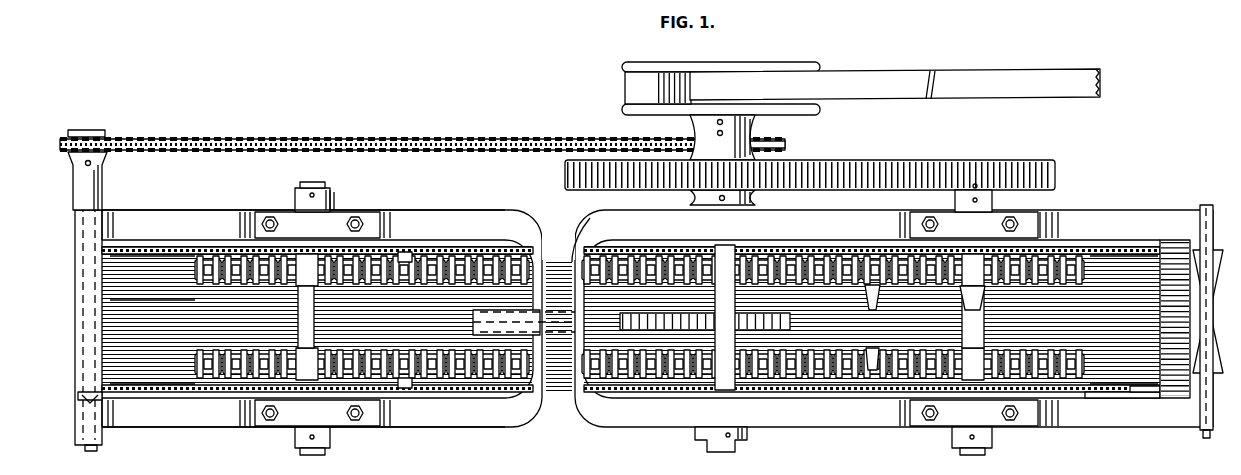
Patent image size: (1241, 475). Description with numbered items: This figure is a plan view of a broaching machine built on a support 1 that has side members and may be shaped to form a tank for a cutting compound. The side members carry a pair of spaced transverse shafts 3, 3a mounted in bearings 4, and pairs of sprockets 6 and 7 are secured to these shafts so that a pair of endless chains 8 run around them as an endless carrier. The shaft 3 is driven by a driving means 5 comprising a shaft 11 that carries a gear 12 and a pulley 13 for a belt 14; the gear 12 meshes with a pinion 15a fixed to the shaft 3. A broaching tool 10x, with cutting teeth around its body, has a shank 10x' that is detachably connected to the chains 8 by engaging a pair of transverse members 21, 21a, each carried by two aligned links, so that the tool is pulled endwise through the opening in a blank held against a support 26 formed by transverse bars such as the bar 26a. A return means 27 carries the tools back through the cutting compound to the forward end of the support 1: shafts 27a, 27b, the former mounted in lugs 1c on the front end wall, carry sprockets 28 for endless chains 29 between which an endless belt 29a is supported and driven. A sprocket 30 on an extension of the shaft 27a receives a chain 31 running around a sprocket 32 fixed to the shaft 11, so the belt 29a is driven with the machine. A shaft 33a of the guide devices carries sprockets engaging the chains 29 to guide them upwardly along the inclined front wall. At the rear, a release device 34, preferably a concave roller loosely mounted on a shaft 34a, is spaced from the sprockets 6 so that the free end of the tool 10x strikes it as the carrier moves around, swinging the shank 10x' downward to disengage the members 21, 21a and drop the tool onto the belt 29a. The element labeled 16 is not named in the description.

The support 1 is at (412, 425).
The lugs 1c is at (96, 226).
The transverse shaft 3 is at (590, 322).
The transverse shaft 3a is at (298, 320).
The bearings 4 is at (332, 216).
The driving means 5 is at (845, 168).
The sprockets 6 is at (980, 236).
The sprockets 7 is at (312, 255).
The endless chains 8 is at (442, 262).
The broaching tool 10x is at (705, 310).
The tool shank 10x' is at (776, 317).
The shaft 11 is at (725, 453).
The gear 12 is at (563, 176).
The pulley 13 is at (624, 80).
The belt 14 is at (988, 79).
The pinion 15a is at (962, 164).
The side bar 16 is at (445, 210).
The transverse member 21 is at (986, 298).
The transverse member 21a is at (868, 300).
The support 26 is at (552, 217).
The transverse bar 26a is at (575, 255).
The return means 27 is at (1098, 392).
The shaft 27a is at (92, 432).
The shaft 27b is at (1140, 392).
The sprockets 28 is at (100, 250).
The endless chains 29 is at (215, 262).
The endless belt 29a is at (170, 275).
The sprocket 30 is at (100, 142).
The chain 31 is at (282, 142).
The sprocket 32 is at (785, 145).
The shaft 33a is at (404, 252).
The release device 34 is at (1198, 360).
The shaft 34a is at (1208, 438).